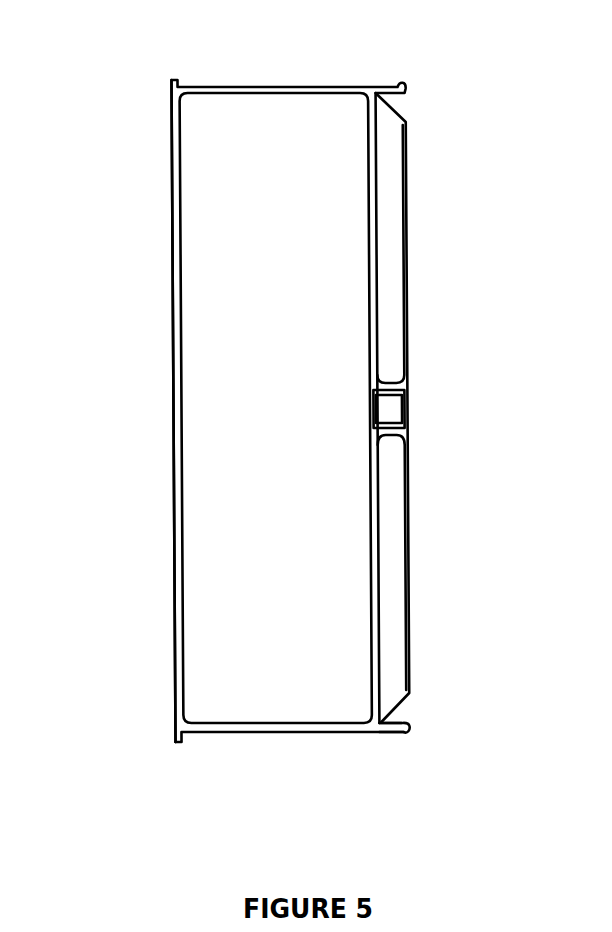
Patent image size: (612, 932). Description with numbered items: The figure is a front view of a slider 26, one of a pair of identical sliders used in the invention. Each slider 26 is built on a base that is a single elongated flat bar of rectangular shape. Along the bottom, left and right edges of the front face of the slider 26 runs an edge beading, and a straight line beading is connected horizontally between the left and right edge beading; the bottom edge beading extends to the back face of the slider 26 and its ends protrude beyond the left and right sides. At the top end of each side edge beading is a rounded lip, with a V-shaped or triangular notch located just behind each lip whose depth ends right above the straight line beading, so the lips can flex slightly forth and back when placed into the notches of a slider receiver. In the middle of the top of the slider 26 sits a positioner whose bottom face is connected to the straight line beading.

The slider 26 is at (297, 408).